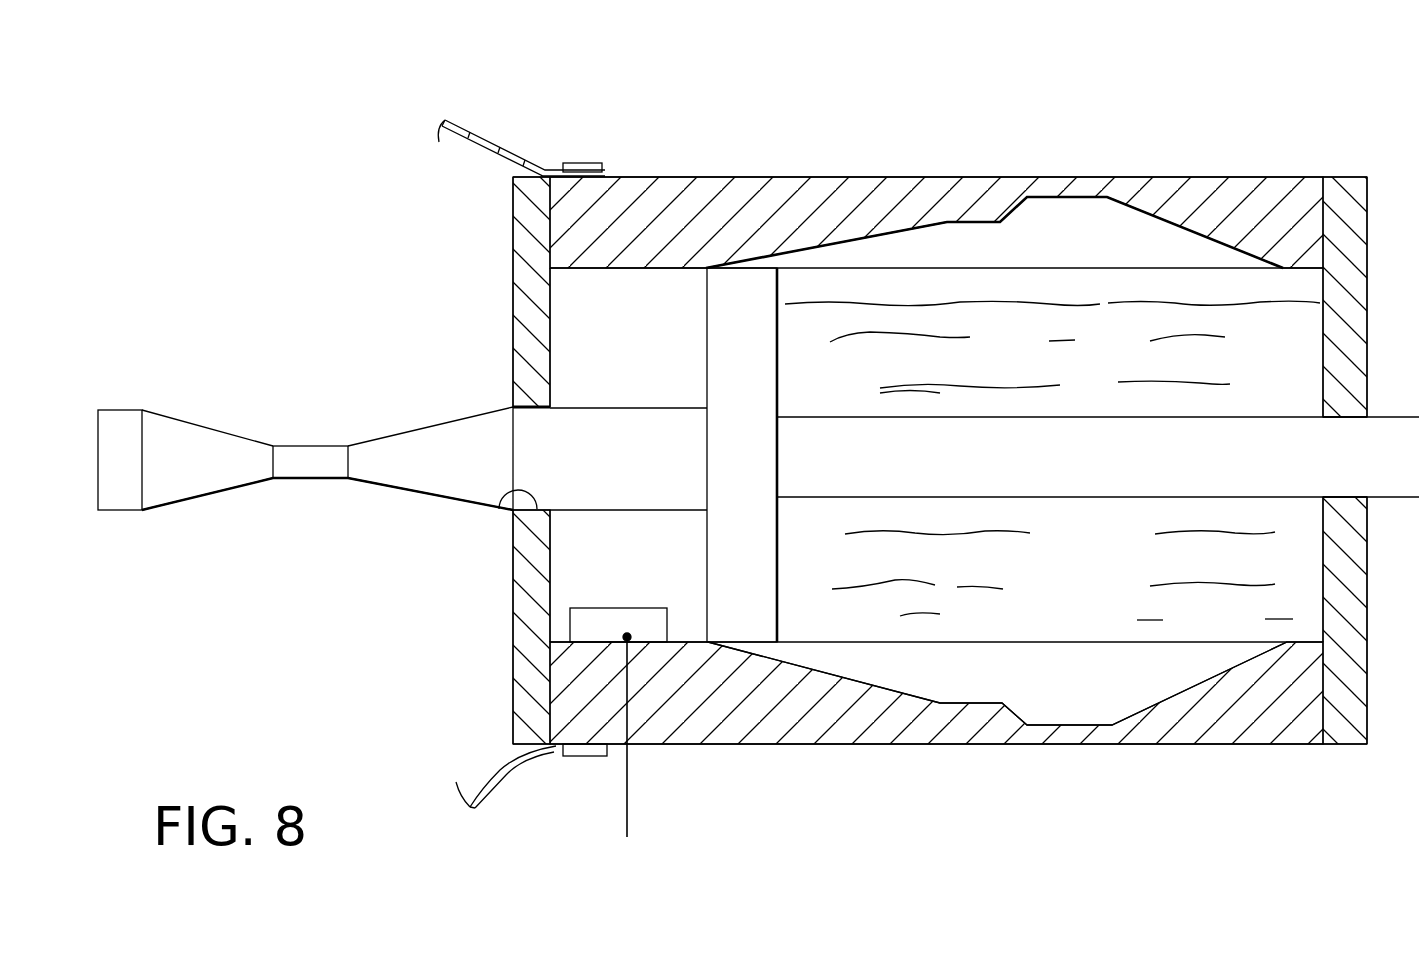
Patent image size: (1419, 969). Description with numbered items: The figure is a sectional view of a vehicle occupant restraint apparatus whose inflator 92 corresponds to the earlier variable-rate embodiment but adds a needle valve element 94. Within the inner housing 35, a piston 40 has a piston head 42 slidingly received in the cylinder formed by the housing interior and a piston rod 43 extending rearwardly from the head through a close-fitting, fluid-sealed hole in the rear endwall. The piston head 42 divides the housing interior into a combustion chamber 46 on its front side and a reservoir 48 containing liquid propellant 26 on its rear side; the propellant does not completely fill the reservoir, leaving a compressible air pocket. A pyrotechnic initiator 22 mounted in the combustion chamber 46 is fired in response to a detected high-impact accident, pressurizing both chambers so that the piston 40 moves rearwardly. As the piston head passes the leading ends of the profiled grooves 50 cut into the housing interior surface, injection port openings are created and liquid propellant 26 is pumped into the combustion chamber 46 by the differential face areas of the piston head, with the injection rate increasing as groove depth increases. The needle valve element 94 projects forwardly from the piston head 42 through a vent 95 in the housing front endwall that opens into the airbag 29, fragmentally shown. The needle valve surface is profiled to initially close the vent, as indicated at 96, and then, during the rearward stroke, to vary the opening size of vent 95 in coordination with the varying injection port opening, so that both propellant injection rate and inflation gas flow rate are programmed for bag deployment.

The inflator 92 is at (1266, 144).
The inner housing 35 is at (945, 178).
The airbag 29 is at (497, 136).
The needle valve element 94 is at (400, 404).
The vent 95 is at (500, 514).
The vent closure 96 is at (545, 411).
The piston head 42 is at (757, 459).
The piston rod 43 is at (1009, 467).
The piston 40 is at (803, 388).
The combustion chamber 46 is at (642, 577).
The reservoir 48 is at (1060, 615).
The pyrotechnic initiator 22 is at (645, 628).
The grooves 50 is at (990, 698).
The liquid propellant 26 is at (1203, 609).